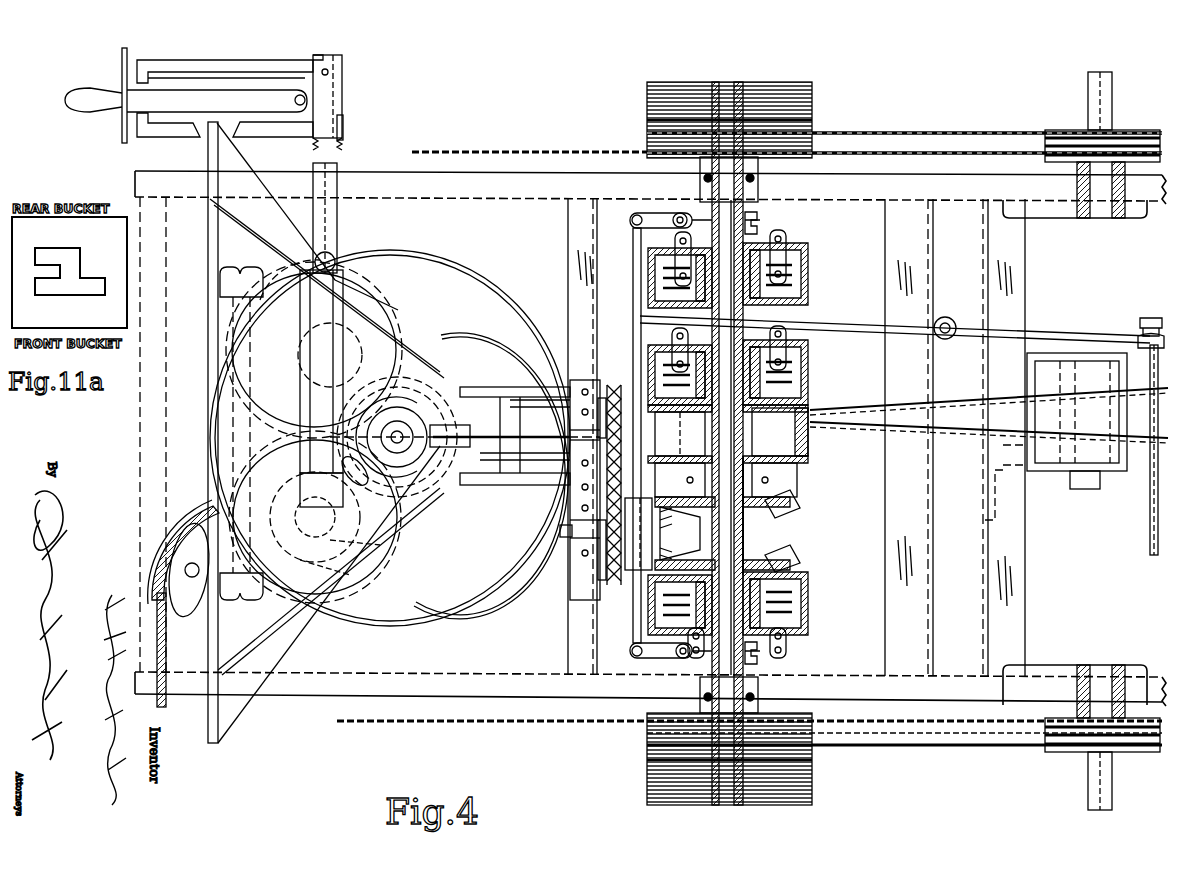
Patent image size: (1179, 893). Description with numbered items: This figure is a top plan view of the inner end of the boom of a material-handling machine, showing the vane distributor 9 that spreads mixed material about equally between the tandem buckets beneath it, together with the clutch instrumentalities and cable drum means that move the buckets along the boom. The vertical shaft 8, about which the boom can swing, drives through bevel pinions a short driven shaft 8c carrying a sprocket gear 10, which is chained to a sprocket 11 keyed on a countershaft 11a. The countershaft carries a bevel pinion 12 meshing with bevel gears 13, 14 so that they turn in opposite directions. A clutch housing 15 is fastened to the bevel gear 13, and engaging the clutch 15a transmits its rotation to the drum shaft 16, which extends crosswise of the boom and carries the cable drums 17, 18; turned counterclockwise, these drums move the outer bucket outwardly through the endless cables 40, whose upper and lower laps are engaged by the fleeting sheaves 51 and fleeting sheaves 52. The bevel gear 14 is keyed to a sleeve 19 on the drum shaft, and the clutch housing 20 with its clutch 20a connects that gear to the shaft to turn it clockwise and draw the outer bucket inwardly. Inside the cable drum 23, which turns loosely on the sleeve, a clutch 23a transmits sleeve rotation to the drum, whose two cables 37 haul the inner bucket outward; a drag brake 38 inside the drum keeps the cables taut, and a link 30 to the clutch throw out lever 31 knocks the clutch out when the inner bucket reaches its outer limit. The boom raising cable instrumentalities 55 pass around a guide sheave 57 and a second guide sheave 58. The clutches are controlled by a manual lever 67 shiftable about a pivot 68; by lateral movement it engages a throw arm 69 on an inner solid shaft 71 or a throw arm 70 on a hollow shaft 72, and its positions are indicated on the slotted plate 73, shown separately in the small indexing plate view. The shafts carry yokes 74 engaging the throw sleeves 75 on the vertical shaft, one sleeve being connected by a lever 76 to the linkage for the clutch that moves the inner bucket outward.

In FIG. 4, the shaft 8 is at (400, 428).
In FIG. 4, the driven shaft 8c is at (563, 440).
In FIG. 4, the distributor 9 is at (478, 340).
In FIG. 4, the sprocket gear 10 is at (612, 395).
In FIG. 4, the sprocket 11 is at (614, 586).
In FIG. 4, the countershaft 11a is at (612, 575).
In FIG. 4, the bevel pinion 12 is at (655, 512).
In FIG. 4, the bevel gear 13 is at (790, 558).
In FIG. 4, the bevel gear 14 is at (785, 497).
In FIG. 4, the clutch housing 15 is at (808, 615).
In FIG. 4, the clutch 15a is at (808, 598).
In FIG. 4, the drum shaft 16 is at (750, 667).
In FIG. 4, the cable drum 17 is at (790, 790).
In FIG. 4, the cable drum 18 is at (812, 95).
In FIG. 4, the sleeve 19 is at (750, 540).
In FIG. 4, the clutch housing 20 is at (648, 290).
In FIG. 4, the clutch 20a is at (672, 270).
In FIG. 4, the cable drum 23 is at (808, 392).
In FIG. 4, the clutch 23a is at (790, 370).
In FIG. 4, the link 30 is at (1150, 540).
In FIG. 4, the clutch throw out lever 31 is at (905, 325).
In FIG. 4, the cables 37 is at (1140, 350).
In FIG. 4, the drag brake 38 is at (808, 450).
In FIG. 4, the cables 40 is at (858, 133).
In FIG. 4, the fleeting sheaves 51 is at (1062, 130).
In FIG. 4, the fleeting sheaves 52 is at (1118, 460).
In FIG. 4, the boom raising cable instrumentalities 55 is at (166, 632).
In FIG. 4, the guide sheave 57 is at (340, 580).
In FIG. 4, the second guide sheave 58 is at (190, 520).
In FIG. 4, the lever 67 is at (258, 112).
In FIG. 4, the pivot 68 is at (300, 106).
In FIG. 4, the throw arm 69 is at (203, 73).
In FIG. 4, the throw arm 70 is at (165, 137).
In FIG. 4, the solid shaft 71 is at (342, 98).
In FIG. 4, the hollow shaft 72 is at (343, 142).
In FIG. 4, the slotted plate 73 is at (122, 60).
In FIG. 11A, the slotted plate 73 is at (70, 301).
In FIG. 4, the yokes 74 is at (360, 380).
In FIG. 4, the throw sleeves 75 is at (405, 440).
In FIG. 4, the lever 76 is at (483, 427).